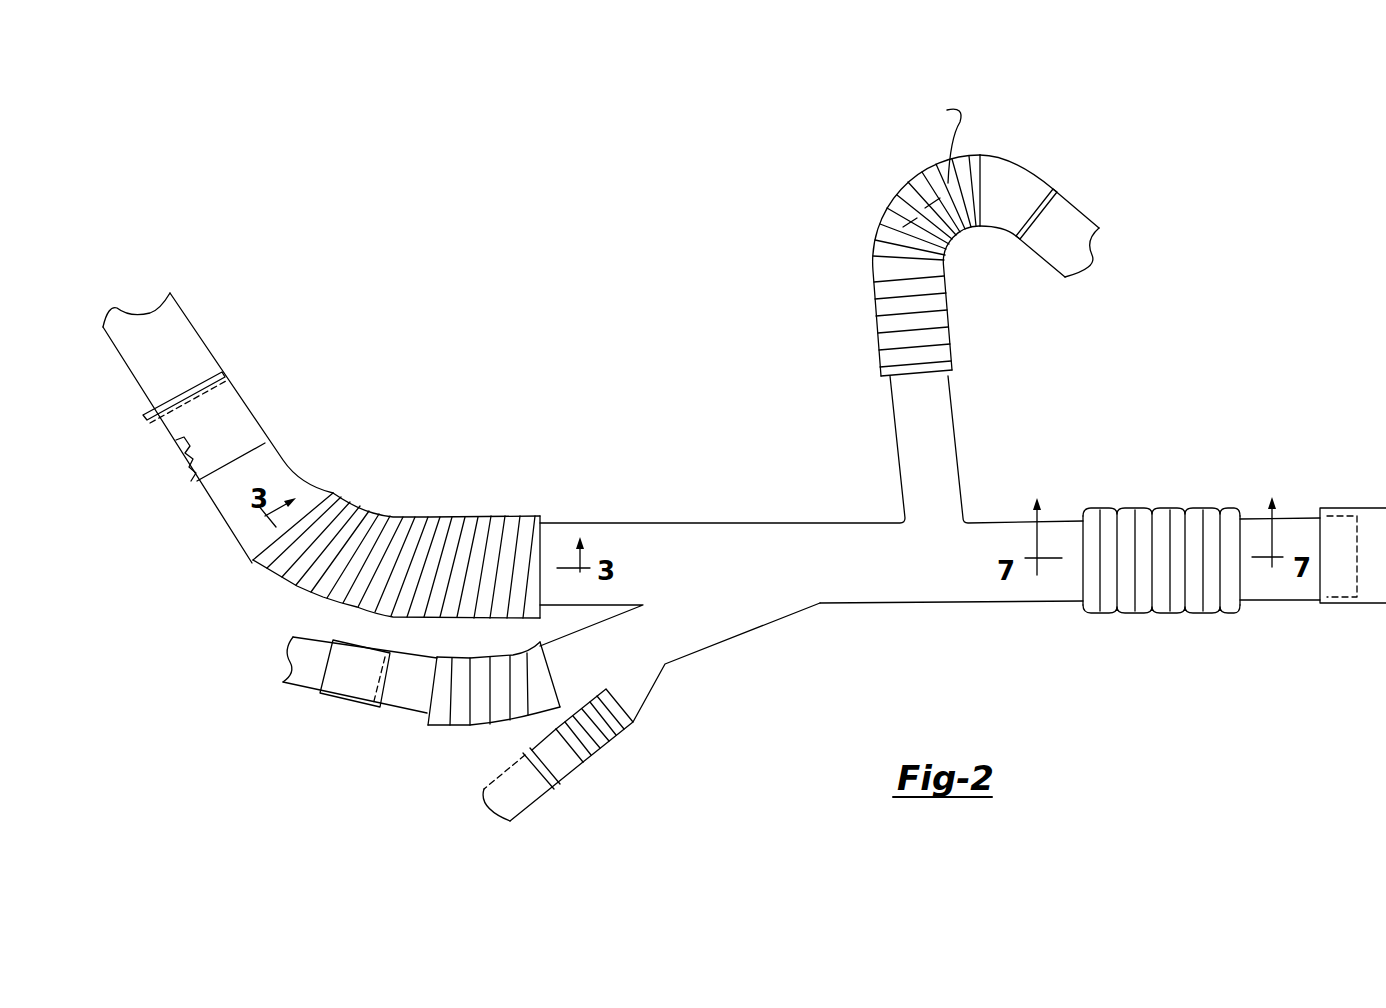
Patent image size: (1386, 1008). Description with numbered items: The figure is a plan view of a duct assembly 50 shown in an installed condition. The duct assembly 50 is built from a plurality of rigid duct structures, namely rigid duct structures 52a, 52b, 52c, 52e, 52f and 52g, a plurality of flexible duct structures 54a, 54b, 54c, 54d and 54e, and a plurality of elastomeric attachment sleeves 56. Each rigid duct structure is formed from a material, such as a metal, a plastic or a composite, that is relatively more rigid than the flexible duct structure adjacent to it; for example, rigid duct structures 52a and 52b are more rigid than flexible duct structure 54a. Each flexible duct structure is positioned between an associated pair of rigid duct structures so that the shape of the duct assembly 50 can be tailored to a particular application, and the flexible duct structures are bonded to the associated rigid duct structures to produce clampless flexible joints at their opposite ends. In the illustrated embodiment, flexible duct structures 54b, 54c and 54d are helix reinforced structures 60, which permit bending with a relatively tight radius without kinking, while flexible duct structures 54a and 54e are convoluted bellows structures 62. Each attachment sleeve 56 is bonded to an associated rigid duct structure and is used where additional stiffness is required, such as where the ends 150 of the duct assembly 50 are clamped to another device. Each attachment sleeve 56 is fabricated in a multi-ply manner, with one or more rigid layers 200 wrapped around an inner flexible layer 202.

The duct assembly 50 is at (1214, 391).
The rigid duct structure 52a is at (1257, 588).
The rigid duct structure 52b is at (858, 595).
The rigid duct structure 52c is at (280, 480).
The rigid duct structure 52e is at (993, 183).
The rigid duct structure 52f is at (410, 695).
The rigid duct structure 52g is at (577, 750).
The flexible duct structure 54a is at (1128, 486).
The flexible duct structure 54b is at (463, 483).
The flexible duct structure 54c is at (840, 278).
The flexible duct structure 54d is at (460, 743).
The flexible duct structure 54e is at (632, 745).
The elastomeric attachment sleeve 56 is at (230, 417).
The helix reinforced structure 60 is at (498, 535).
The convoluted bellows structure 62 is at (1153, 590).
The end of duct assembly 150 is at (231, 350).
The rigid layer 200 is at (165, 427).
The inner flexible layer 202 is at (178, 450).